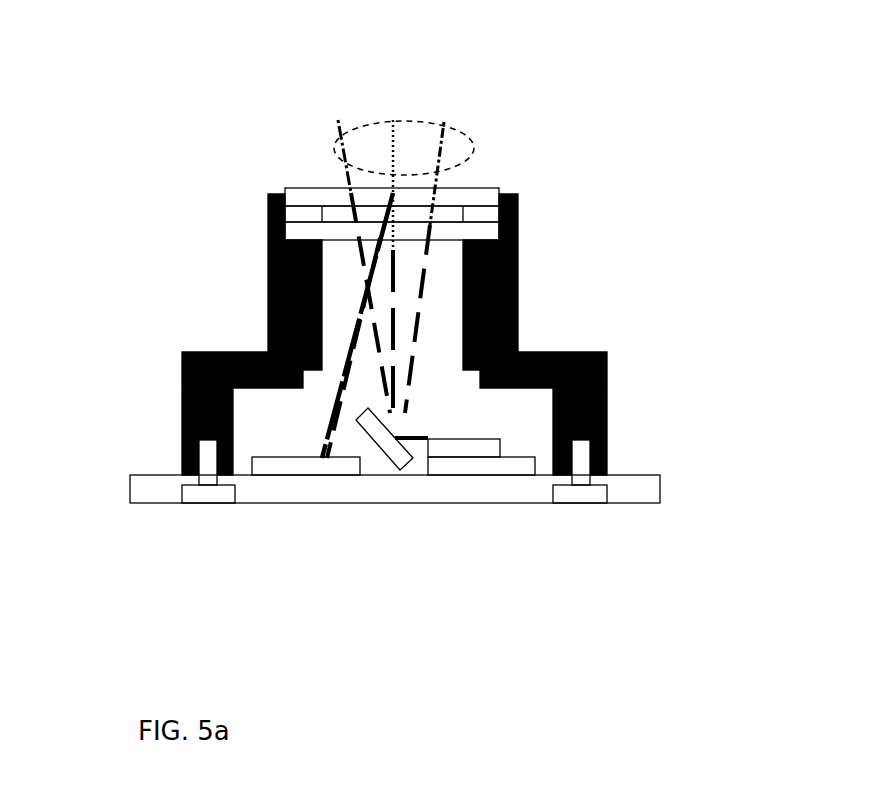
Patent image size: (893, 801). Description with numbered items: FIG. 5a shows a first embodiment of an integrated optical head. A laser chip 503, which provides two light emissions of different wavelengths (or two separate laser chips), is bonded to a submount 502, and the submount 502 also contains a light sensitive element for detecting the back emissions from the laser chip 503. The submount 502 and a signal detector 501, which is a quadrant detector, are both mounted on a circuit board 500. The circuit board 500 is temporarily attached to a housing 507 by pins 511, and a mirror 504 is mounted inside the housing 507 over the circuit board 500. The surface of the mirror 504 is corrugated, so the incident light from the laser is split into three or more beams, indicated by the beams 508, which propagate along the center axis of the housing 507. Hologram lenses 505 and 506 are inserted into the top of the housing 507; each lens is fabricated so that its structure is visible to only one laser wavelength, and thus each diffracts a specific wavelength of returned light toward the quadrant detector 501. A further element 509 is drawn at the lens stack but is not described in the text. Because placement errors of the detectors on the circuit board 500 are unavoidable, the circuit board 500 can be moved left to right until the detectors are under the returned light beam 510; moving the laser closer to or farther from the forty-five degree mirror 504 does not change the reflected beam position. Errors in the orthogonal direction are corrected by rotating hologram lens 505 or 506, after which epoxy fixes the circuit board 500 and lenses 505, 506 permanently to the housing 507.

The circuit board 500 is at (253, 495).
The signal detector 501 is at (282, 456).
The submount 502 is at (522, 456).
The laser chip 503 is at (488, 437).
The mirror 504 is at (354, 420).
The hologram lens 505 is at (339, 189).
The hologram lens 506 is at (448, 220).
The housing 507 is at (592, 349).
The split beams 508 is at (386, 118).
The lens holder layer 509 is at (369, 228).
The returned light beam 510 is at (369, 282).
The pins 511 is at (214, 494).